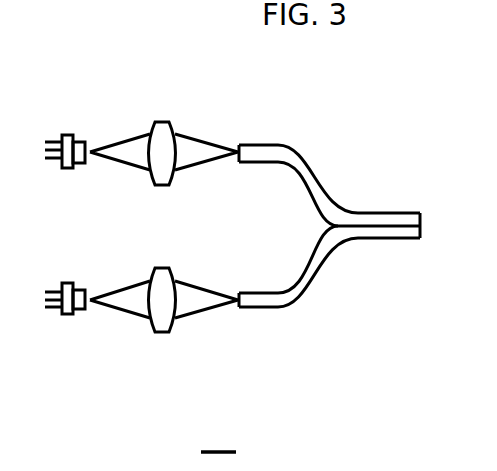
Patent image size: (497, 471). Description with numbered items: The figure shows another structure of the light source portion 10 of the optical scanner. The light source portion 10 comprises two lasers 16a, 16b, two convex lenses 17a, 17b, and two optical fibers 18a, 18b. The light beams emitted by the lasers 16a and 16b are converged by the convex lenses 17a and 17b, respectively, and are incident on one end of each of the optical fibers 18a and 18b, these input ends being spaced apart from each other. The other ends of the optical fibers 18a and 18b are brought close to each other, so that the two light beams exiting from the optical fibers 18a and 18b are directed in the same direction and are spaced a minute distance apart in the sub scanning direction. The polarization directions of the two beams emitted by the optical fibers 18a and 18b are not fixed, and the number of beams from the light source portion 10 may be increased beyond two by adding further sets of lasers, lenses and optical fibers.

The light source portion 10 is at (218, 436).
The laser 16a is at (82, 141).
The laser 16b is at (63, 314).
The convex lens 17a is at (160, 122).
The convex lens 17b is at (158, 332).
The optical fiber 18a is at (270, 150).
The optical fiber 18b is at (273, 308).